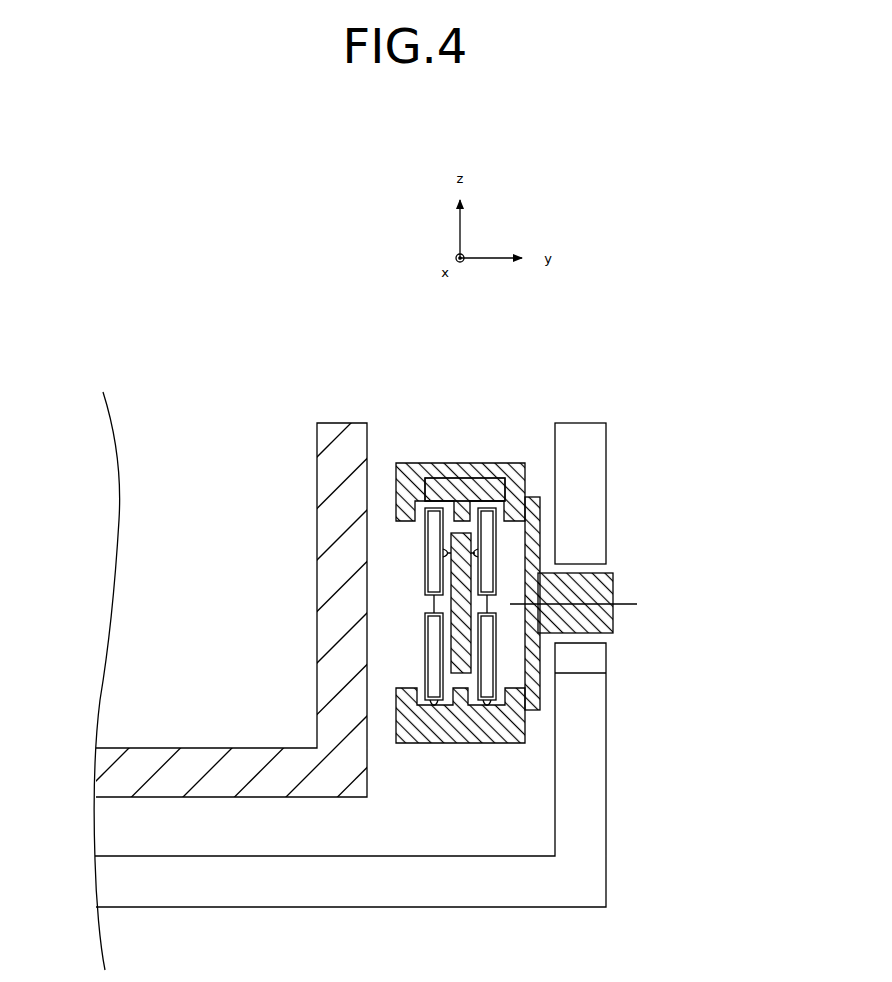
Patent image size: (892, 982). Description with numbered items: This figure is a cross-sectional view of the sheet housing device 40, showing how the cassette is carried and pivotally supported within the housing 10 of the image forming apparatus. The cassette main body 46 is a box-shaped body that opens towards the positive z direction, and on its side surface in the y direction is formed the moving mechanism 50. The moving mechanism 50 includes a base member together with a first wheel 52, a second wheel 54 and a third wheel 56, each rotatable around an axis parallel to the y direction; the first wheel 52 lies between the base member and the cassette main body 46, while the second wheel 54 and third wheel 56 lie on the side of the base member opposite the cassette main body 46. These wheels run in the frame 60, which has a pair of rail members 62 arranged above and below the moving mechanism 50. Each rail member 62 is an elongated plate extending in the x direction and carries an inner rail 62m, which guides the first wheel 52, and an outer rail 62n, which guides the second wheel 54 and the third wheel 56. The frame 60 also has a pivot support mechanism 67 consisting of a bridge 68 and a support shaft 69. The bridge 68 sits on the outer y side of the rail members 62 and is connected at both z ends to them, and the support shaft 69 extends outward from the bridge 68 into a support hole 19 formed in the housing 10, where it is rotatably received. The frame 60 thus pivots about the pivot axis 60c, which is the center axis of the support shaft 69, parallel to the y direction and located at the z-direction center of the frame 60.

The housing 10 is at (606, 787).
The support hole 19 is at (587, 657).
The sheet housing device 40 is at (324, 292).
The cassette main body 46 is at (330, 468).
The moving mechanism 50 is at (398, 603).
The first wheel 52 is at (423, 462).
The second wheel 54 is at (500, 470).
The third wheel 56 is at (493, 435).
The frame 60 is at (447, 757).
The pivot axis 60c is at (627, 608).
The rail member 62 is at (463, 743).
The inner rail 62m is at (425, 743).
The outer rail 62n is at (488, 743).
The pivot support mechanism 67 is at (720, 522).
The bridge 68 is at (543, 538).
The support shaft 69 is at (613, 592).